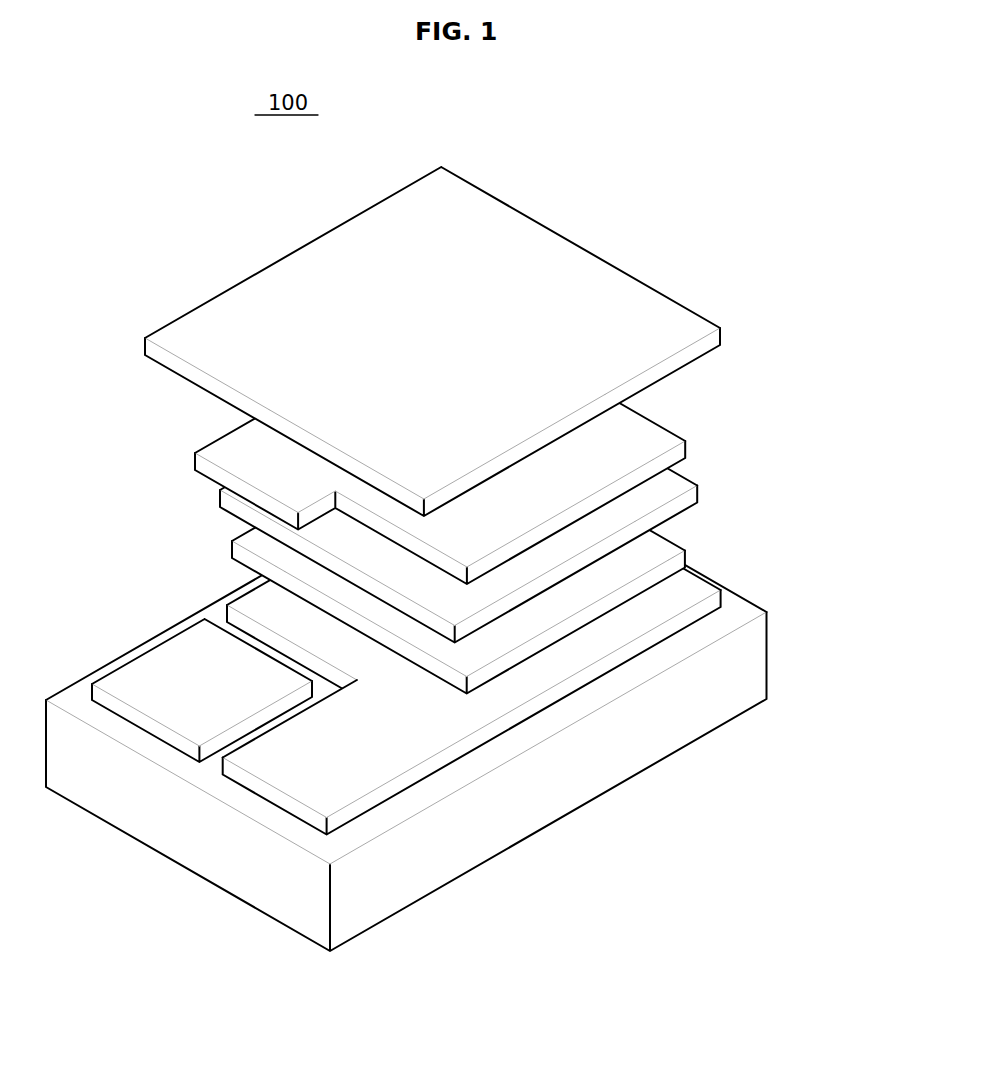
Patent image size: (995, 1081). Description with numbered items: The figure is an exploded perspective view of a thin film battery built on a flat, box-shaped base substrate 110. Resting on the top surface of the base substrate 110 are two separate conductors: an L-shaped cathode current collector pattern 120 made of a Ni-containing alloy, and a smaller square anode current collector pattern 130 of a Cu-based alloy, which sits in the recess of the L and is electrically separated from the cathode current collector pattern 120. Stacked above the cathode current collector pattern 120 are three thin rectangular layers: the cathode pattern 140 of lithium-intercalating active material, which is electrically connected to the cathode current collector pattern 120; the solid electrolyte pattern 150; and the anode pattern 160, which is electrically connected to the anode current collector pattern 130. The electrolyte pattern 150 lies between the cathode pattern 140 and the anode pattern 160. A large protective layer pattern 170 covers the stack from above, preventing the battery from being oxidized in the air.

The base substrate 110 is at (740, 670).
The cathode current collector pattern 120 is at (690, 588).
The anode current collector pattern 130 is at (167, 680).
The cathode pattern 140 is at (655, 550).
The electrolyte pattern 150 is at (655, 492).
The anode pattern 160 is at (655, 438).
The protective layer pattern 170 is at (655, 310).